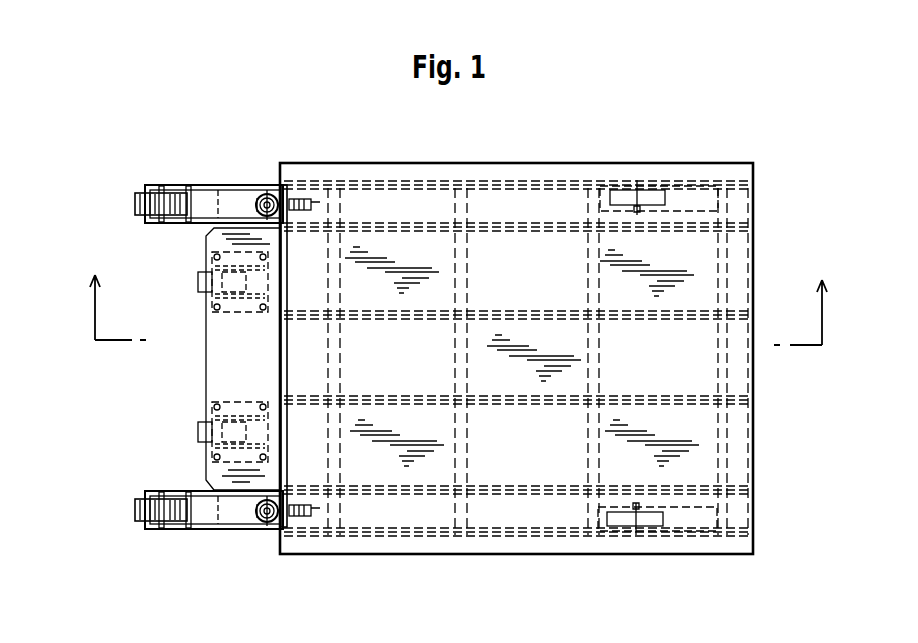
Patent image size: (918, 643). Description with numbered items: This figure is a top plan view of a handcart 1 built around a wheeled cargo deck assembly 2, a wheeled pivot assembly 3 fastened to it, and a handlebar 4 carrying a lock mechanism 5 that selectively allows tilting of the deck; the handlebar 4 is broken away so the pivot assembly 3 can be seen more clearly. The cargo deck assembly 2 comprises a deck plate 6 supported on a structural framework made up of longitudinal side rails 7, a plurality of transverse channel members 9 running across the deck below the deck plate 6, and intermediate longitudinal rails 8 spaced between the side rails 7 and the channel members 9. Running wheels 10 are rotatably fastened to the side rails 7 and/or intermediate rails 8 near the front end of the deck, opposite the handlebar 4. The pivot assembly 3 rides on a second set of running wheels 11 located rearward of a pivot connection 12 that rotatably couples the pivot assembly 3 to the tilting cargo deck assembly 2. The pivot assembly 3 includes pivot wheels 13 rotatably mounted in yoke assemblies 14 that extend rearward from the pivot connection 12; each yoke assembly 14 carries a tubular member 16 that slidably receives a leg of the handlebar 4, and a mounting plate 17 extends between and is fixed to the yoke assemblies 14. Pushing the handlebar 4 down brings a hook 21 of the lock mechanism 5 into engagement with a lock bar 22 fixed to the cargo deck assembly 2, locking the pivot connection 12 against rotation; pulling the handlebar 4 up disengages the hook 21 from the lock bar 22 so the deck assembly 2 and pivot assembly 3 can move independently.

The handcart 1 is at (663, 113).
The wheeled cargo deck assembly 2 is at (766, 201).
The wheeled pivot assembly 3 is at (188, 165).
The handlebar 4 is at (262, 196).
The lock mechanism 5 is at (313, 203).
The deck plate 6 is at (529, 278).
The longitudinal side rails 7 is at (402, 180).
The intermediate longitudinal rails 8 is at (703, 216).
The transverse channel members 9 is at (458, 378).
The running wheels 10 is at (626, 185).
The second set of running wheels 11 is at (200, 283).
The pivot connection 12 is at (267, 193).
The pivot wheels 13 is at (137, 203).
The yoke assembly 14 is at (188, 195).
The tubular member 16 is at (257, 205).
The mounting plate 17 is at (216, 372).
The hook 21 is at (299, 199).
The lock bar 22 is at (288, 305).